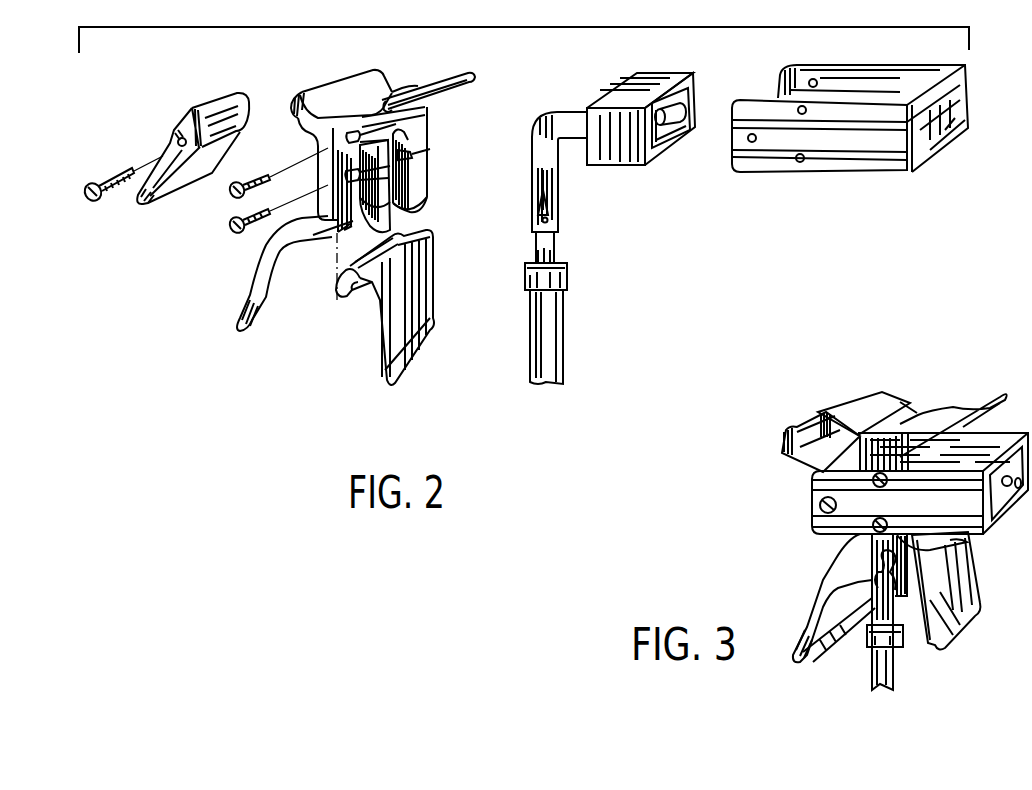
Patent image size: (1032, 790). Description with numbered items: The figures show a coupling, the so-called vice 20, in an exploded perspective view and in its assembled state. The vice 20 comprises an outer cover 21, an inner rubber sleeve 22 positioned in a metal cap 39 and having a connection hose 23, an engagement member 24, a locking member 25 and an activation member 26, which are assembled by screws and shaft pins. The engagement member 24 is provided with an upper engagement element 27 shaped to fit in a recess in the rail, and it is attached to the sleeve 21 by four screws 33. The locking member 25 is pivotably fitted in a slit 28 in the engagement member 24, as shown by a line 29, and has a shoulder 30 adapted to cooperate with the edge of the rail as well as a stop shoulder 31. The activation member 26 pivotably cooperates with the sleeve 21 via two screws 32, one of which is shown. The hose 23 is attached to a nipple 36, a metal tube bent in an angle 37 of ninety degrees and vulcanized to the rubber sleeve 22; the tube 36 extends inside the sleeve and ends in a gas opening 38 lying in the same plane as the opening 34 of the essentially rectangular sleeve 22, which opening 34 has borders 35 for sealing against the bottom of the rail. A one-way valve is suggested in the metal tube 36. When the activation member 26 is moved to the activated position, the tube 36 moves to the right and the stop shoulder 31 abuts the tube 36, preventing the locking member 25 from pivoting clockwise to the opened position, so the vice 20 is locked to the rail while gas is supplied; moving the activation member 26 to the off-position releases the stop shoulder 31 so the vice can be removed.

In FIG. 3, the vice 20 is at (760, 459).
In FIG. 2, the outer cover 21 is at (848, 173).
In FIG. 3, the outer cover 21 is at (920, 483).
In FIG. 2, the inner rubber sleeve 22 is at (693, 90).
In FIG. 2, the connection hose 23 is at (530, 323).
In FIG. 2, the engagement member 24 is at (322, 86).
In FIG. 3, the engagement member 24 is at (846, 432).
In FIG. 2, the locking member 25 is at (392, 384).
In FIG. 3, the locking member 25 is at (938, 590).
In FIG. 2, the activation member 26 is at (182, 176).
In FIG. 3, the activation member 26 is at (953, 425).
In FIG. 2, the upper engagement element 27 is at (462, 70).
In FIG. 2, the slit 28 is at (333, 238).
In FIG. 3, the slit 28 is at (834, 598).
In FIG. 2, the line 29 is at (337, 272).
In FIG. 3, the line 29 is at (885, 570).
In FIG. 2, the shoulder 30 is at (430, 246).
In FIG. 2, the stop shoulder 31 is at (343, 300).
In FIG. 2, the screws 32 is at (114, 192).
In FIG. 3, the screws 32 is at (818, 505).
In FIG. 2, the screws 33 is at (236, 240).
In FIG. 3, the screws 33 is at (852, 537).
In FIG. 2, the opening 34 is at (660, 138).
In FIG. 2, the borders 35 is at (681, 138).
In FIG. 2, the nipple 36 is at (532, 165).
In FIG. 3, the nipple 36 is at (868, 608).
In FIG. 2, the angle 37 is at (537, 130).
In FIG. 2, the gas opening 38 is at (690, 108).
In FIG. 2, the metal cap 39 is at (603, 92).